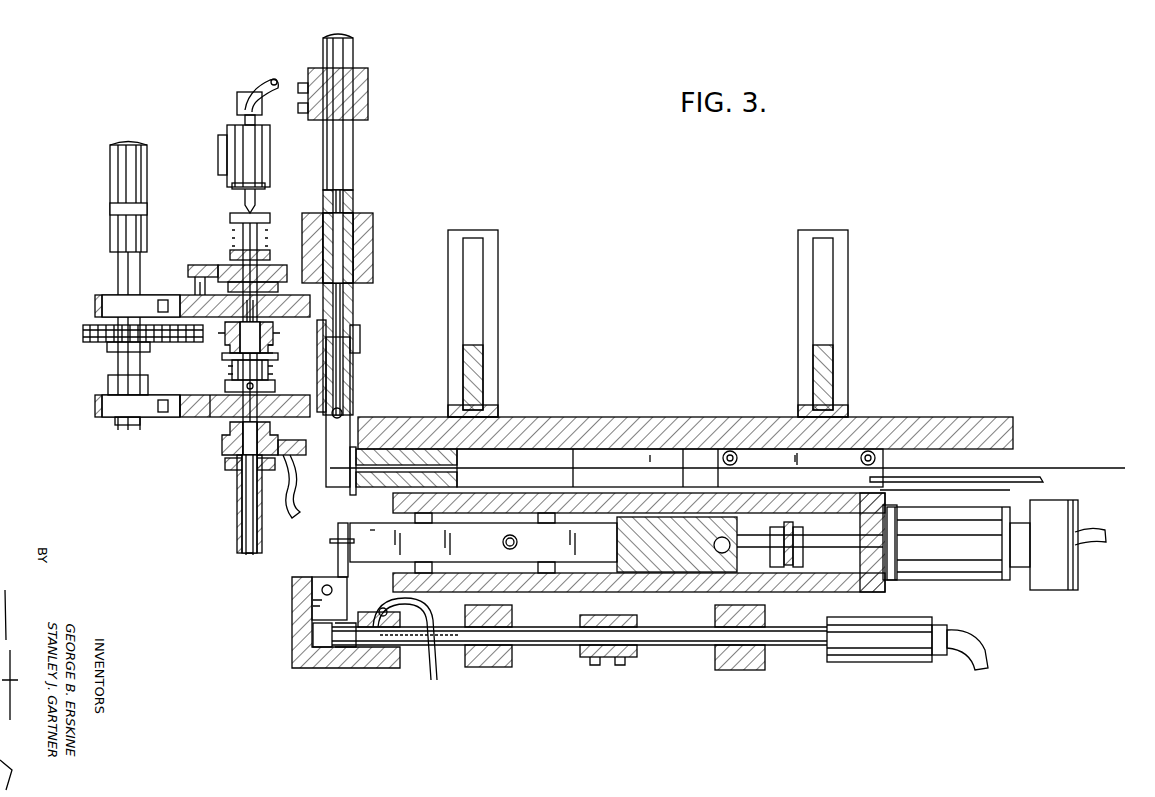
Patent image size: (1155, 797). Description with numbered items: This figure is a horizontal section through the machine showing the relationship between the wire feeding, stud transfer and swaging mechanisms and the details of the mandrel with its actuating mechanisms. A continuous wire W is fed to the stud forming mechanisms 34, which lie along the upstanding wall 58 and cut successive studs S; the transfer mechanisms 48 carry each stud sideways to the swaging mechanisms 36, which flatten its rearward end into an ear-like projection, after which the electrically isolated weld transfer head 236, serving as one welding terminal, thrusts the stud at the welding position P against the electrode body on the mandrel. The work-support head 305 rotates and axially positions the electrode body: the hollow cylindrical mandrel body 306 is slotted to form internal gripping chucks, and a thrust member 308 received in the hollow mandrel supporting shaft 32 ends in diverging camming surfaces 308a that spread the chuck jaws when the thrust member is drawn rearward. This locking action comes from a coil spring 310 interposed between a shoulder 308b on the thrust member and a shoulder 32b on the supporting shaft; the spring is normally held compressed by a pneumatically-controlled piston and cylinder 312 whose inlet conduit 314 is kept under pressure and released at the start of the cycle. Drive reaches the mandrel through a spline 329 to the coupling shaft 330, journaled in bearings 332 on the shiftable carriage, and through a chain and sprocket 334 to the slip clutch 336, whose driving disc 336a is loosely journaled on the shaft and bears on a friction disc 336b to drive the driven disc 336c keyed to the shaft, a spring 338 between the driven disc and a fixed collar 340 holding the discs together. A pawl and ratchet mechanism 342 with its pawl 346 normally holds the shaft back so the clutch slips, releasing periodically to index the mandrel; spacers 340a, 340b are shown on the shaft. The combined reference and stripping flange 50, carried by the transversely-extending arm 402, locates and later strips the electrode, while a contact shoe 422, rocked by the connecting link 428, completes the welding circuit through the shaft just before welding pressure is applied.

The mandrel supporting shaft 32 is at (220, 417).
The shoulder 32b is at (232, 250).
The stud forming mechanisms 34 is at (1068, 442).
The swaging mechanisms 36 is at (955, 596).
The transfer mechanisms 48 is at (372, 172).
The combined reference and stripping flange 50 is at (230, 475).
The upstanding wall 58 is at (955, 418).
The weld transfer head 236 is at (305, 670).
The work-support head 305 is at (120, 432).
The mandrel body 306 is at (240, 538).
The thrust member 308 is at (248, 462).
The diverging camming surfaces 308a is at (248, 556).
The shoulder 308b is at (240, 222).
The coil spring 310 is at (235, 232).
The pneumatically-controlled piston and cylinder 312 is at (240, 148).
The inlet conduit 314 is at (266, 85).
The spline 329 is at (115, 210).
The coupling shaft 330 is at (120, 268).
The bearings 332 is at (100, 302).
The chain and sprocket 334 is at (95, 340).
The slip clutch 336 is at (225, 346).
The driving disc 336a is at (272, 338).
The friction disc 336b is at (270, 362).
The driven disc 336c is at (228, 363).
The spring 338 is at (235, 376).
The collar 340 is at (265, 392).
The upper spacer 340a is at (188, 302).
The lower spacer 340b is at (172, 420).
The pawl and ratchet mechanism 342 is at (283, 263).
The pawl 346 is at (188, 266).
The transversely-extending arm 402 is at (222, 470).
The contact shoe 422 is at (312, 444).
The connecting link 428 is at (225, 446).
The stud S is at (338, 540).
The welding position P is at (356, 540).
The wire W is at (1088, 470).